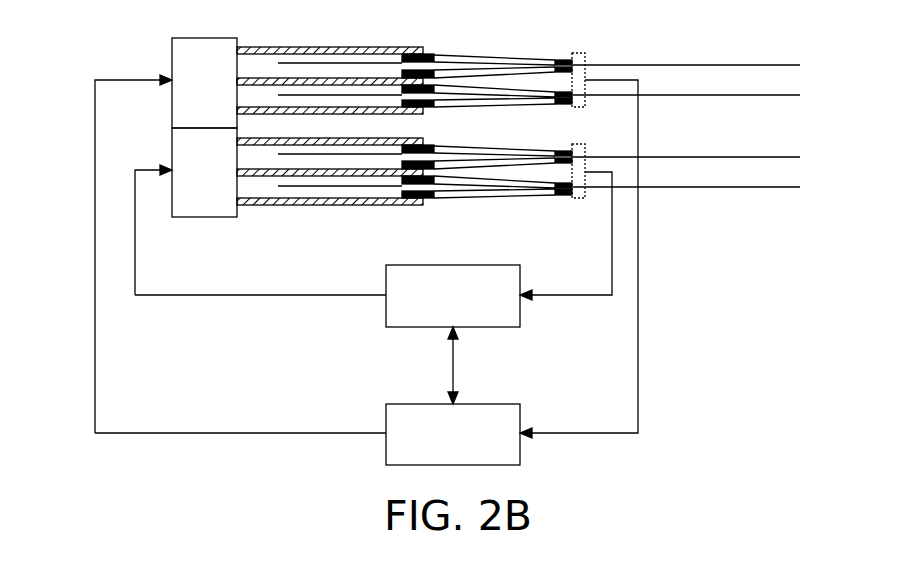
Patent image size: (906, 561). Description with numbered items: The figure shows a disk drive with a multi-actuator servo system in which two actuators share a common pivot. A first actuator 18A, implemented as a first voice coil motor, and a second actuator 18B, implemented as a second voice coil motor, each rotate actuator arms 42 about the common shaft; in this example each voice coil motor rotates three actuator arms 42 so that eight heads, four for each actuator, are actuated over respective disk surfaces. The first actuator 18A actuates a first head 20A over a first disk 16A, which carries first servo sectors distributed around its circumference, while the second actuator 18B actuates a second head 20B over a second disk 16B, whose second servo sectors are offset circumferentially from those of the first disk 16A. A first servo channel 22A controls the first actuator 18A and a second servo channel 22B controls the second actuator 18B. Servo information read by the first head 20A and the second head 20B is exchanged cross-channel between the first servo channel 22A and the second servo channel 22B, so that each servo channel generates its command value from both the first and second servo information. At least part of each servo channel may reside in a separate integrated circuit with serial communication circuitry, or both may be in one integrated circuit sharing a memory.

The first actuator 18A is at (172, 40).
The second actuator 18B is at (172, 138).
The actuator arm 42 is at (312, 47).
The first head 20A is at (556, 54).
The second head 20B is at (556, 145).
The first disk 16A is at (798, 55).
The second disk 16B is at (792, 148).
The first servo channel 22A is at (386, 409).
The second servo channel 22B is at (386, 269).